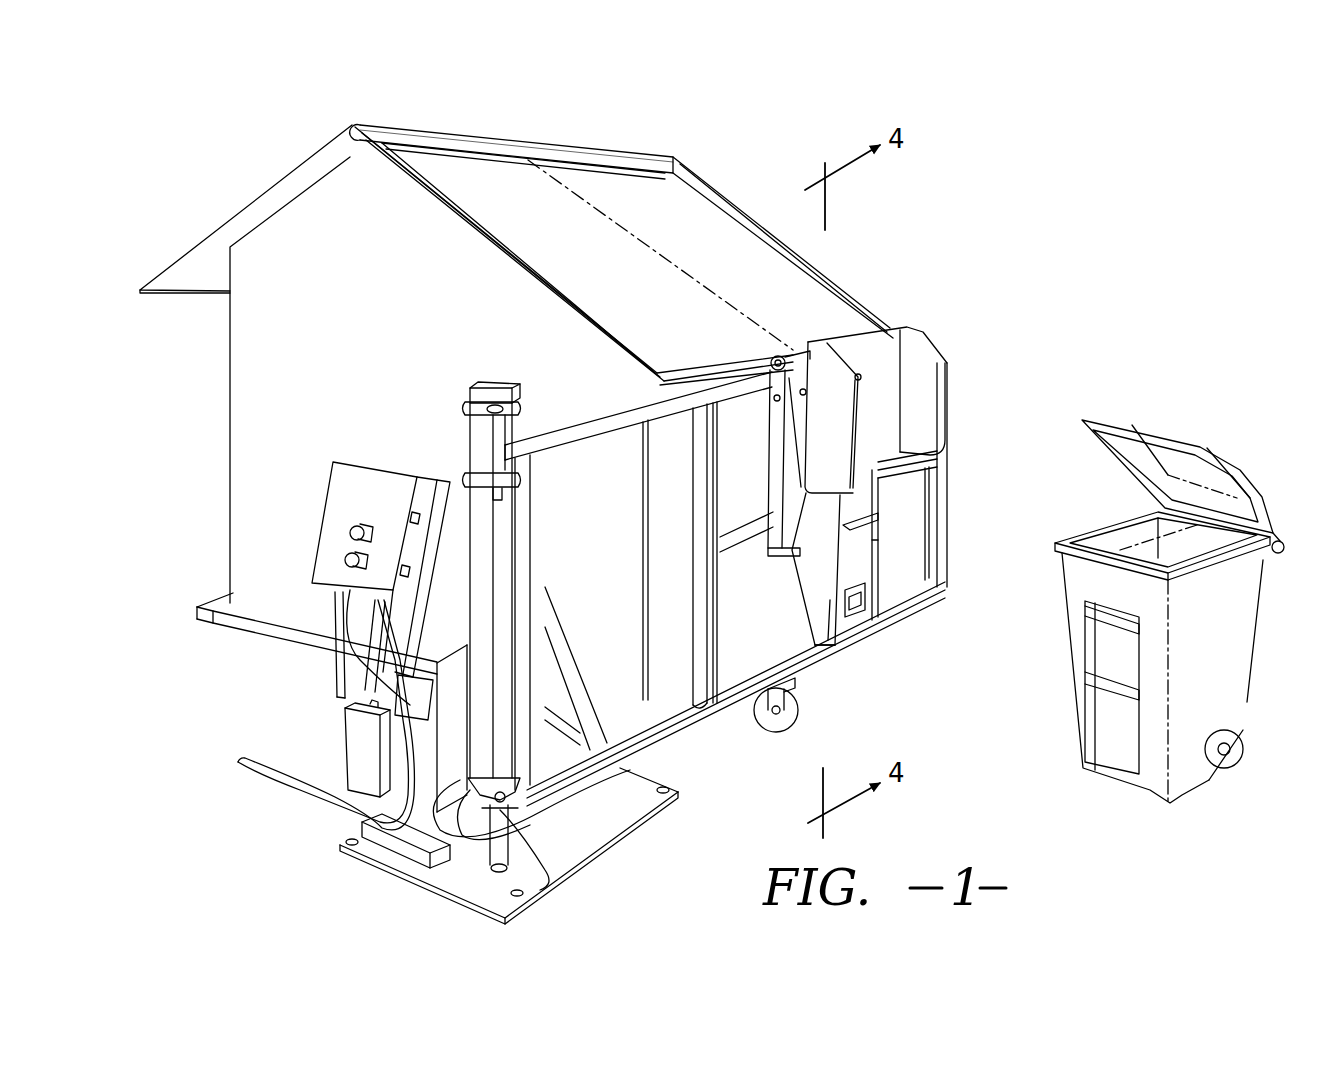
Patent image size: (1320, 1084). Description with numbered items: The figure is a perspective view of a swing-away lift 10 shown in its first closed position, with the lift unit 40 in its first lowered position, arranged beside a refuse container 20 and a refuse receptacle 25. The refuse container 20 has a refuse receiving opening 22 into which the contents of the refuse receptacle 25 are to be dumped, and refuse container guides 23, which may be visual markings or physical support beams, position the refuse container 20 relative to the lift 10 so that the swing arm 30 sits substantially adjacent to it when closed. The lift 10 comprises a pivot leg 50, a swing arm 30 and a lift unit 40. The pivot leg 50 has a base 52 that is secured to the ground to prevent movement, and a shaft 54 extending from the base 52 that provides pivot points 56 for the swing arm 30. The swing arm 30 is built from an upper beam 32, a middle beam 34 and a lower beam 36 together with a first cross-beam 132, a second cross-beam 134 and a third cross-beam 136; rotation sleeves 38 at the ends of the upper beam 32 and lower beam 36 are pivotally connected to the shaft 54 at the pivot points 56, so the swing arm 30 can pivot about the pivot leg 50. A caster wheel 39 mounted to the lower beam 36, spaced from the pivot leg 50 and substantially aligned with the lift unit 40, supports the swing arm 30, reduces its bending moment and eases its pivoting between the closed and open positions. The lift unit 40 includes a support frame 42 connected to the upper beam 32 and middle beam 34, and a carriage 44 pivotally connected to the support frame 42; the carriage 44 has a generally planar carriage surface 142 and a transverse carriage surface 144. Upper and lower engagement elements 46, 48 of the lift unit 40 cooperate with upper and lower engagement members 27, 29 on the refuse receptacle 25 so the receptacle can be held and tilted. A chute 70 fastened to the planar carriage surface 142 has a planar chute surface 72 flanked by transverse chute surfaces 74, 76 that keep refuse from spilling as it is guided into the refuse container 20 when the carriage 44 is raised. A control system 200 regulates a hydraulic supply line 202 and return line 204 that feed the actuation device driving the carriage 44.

The swing-away lift 10 is at (228, 827).
The refuse container 20 is at (228, 402).
The refuse receiving opening 22 is at (565, 207).
The refuse container guide 23 is at (183, 603).
The refuse receptacle 25 is at (1162, 611).
The upper engagement member 27 is at (1104, 632).
The lower engagement member 29 is at (1110, 702).
The swing arm 30 is at (765, 574).
The upper beam 32 is at (573, 442).
The middle beam 34 is at (742, 538).
The lower beam 36 is at (673, 740).
The rotation sleeve 38 is at (495, 450).
The wheel 39 is at (805, 720).
The lift unit 40 is at (935, 364).
The support frame 42 is at (777, 447).
The carriage 44 is at (863, 570).
The upper engagement element 46 is at (870, 550).
The lower engagement element 48 is at (826, 612).
The pivot leg 50 is at (510, 665).
The base 52 is at (640, 810).
The shaft 54 is at (525, 800).
The pivot point 56 is at (493, 430).
The chute 70 is at (893, 343).
The planar chute surface 72 is at (862, 347).
The transverse chute surface 74 is at (827, 357).
The transverse chute surface 76 is at (927, 435).
The first cross-beam 132 is at (537, 513).
The second cross-beam 134 is at (712, 722).
The third cross-beam 136 is at (940, 493).
The planar carriage surface 142 is at (865, 597).
The transverse carriage surface 144 is at (822, 645).
The control system 200 is at (343, 492).
The supply line 202 is at (447, 847).
The return line 204 is at (520, 870).